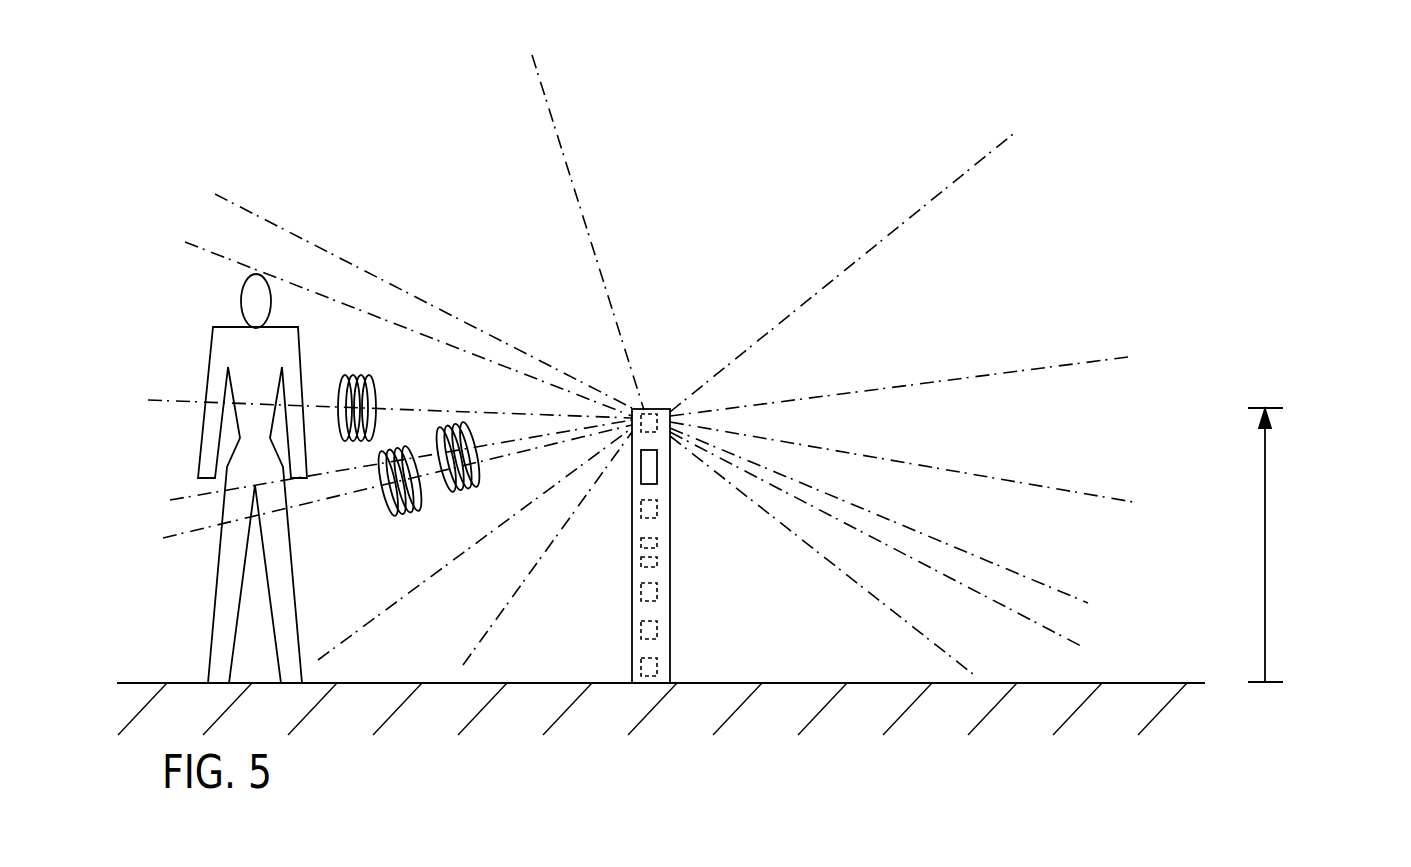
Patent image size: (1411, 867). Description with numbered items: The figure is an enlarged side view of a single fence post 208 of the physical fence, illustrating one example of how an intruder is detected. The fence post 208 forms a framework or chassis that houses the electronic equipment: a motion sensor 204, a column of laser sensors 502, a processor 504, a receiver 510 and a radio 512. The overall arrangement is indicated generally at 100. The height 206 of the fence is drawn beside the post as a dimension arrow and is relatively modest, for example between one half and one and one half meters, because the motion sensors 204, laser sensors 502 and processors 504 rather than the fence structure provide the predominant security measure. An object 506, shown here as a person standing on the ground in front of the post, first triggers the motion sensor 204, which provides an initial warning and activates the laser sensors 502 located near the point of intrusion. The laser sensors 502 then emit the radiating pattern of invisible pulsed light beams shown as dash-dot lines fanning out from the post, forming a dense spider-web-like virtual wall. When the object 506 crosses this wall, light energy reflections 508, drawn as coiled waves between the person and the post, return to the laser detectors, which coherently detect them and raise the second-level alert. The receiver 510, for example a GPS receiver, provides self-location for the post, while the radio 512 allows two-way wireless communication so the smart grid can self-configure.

The security screening system 100 is at (297, 74).
The motion sensor 204 is at (632, 466).
The height of the physical fence 206 is at (1265, 531).
The fence post 208 is at (632, 612).
The laser sensor 502 is at (662, 407).
The processor 504 is at (670, 632).
The object 506 is at (227, 349).
The light energy reflections 508 is at (387, 513).
The receiver 510 is at (641, 542).
The radio 512 is at (641, 562).